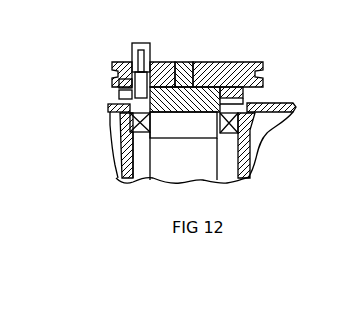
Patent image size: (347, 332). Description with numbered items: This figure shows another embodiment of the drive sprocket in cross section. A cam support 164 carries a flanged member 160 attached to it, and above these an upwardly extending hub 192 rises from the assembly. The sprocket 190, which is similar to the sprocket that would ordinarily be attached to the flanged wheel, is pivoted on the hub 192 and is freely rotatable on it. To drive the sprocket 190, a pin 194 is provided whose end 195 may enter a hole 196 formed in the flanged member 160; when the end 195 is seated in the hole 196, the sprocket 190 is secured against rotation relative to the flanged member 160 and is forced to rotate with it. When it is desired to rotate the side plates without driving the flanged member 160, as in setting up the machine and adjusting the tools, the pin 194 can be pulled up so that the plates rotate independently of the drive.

The flanged member 160 is at (244, 91).
The cam support 164 is at (162, 168).
The sprocket 190 is at (247, 62).
The hub 192 is at (189, 61).
The pin 194 is at (150, 43).
The end of pin 195 is at (120, 90).
The hole 196 is at (118, 98).